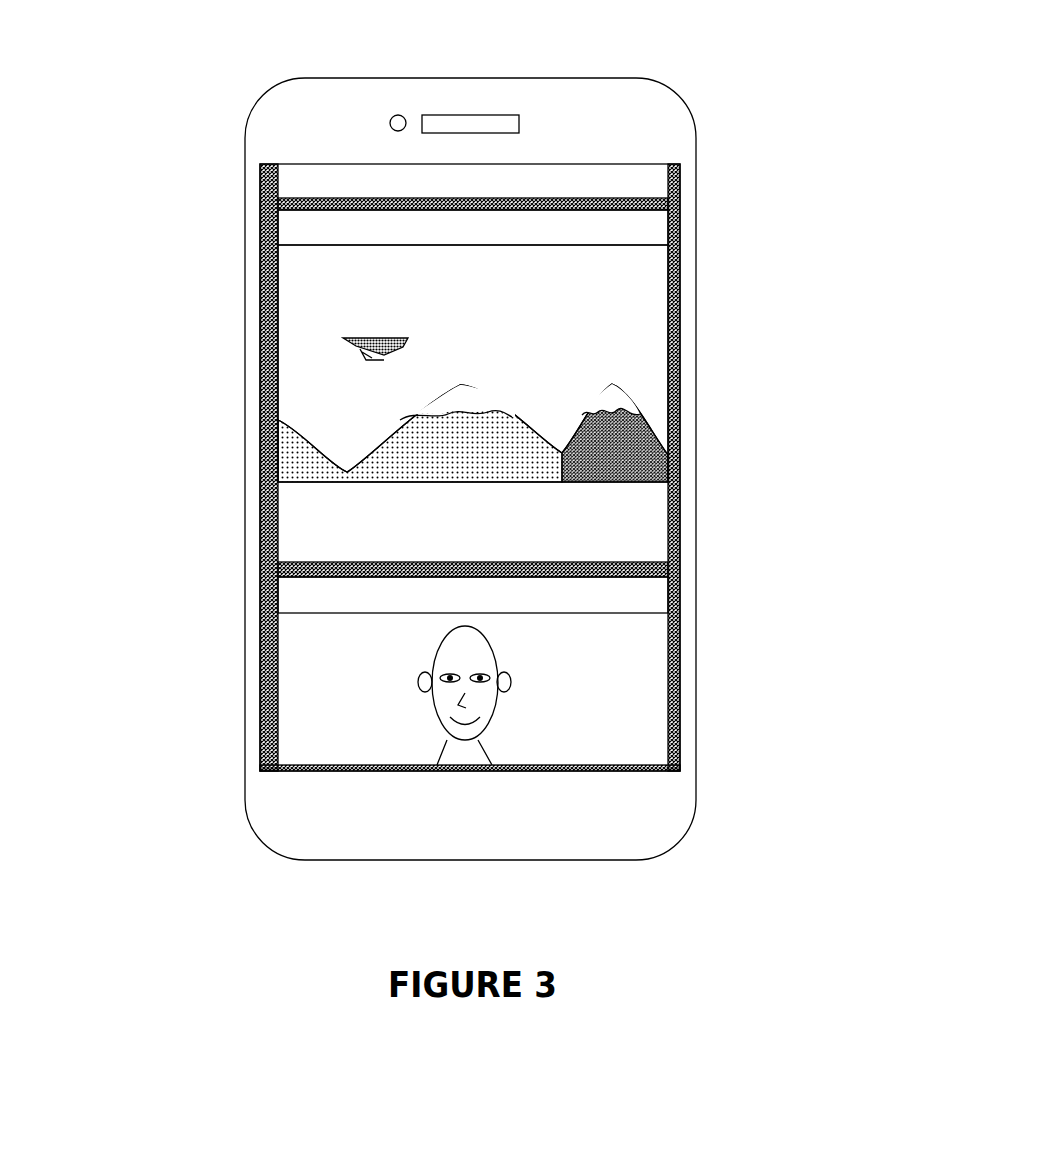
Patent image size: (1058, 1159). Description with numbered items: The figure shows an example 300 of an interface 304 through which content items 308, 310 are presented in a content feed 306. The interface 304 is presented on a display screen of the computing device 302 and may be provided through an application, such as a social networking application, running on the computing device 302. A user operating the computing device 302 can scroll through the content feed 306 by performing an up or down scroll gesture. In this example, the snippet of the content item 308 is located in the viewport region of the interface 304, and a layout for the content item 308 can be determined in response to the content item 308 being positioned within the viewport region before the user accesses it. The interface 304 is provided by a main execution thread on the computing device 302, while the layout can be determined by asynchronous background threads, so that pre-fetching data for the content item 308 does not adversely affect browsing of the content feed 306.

The example 300 is at (111, 62).
The computing device 302 is at (620, 80).
The interface 304 is at (255, 205).
The content feed 306 is at (680, 180).
The content item 308 is at (293, 289).
The content item 310 is at (638, 660).